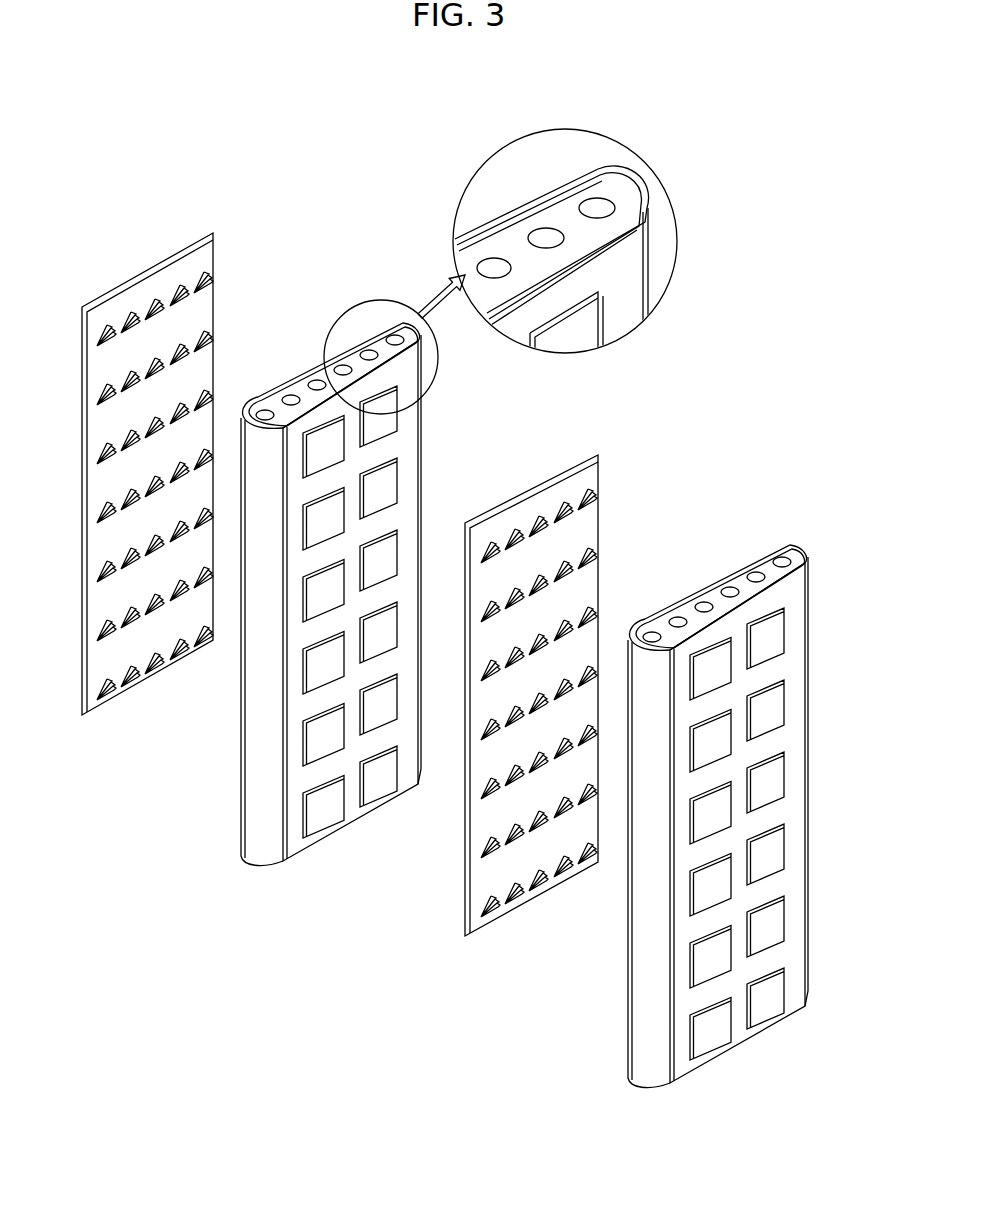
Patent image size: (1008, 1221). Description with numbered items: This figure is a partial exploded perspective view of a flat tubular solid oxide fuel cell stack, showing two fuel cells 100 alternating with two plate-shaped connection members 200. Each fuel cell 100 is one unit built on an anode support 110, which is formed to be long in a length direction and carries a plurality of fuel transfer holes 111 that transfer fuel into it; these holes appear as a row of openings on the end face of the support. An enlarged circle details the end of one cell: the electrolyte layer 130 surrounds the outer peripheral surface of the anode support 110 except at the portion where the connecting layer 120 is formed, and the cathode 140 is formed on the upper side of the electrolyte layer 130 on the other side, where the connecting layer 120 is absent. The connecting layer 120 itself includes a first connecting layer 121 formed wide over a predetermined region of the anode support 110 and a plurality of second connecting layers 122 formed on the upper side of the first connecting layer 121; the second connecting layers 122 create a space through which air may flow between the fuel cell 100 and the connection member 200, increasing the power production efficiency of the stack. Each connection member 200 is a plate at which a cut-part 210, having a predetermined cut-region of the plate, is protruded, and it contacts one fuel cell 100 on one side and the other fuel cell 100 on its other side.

The fuel cell 100 is at (437, 448).
The anode support 110 is at (628, 176).
The fuel transfer hole 111 is at (595, 205).
The connecting layer 120 is at (621, 368).
The first connecting layer 121 is at (623, 313).
The second connecting layer 122 is at (582, 343).
The electrolyte layer 130 is at (648, 213).
The cathode 140 is at (527, 203).
The connection member 200 is at (401, 547).
The cut-part 210 is at (216, 277).